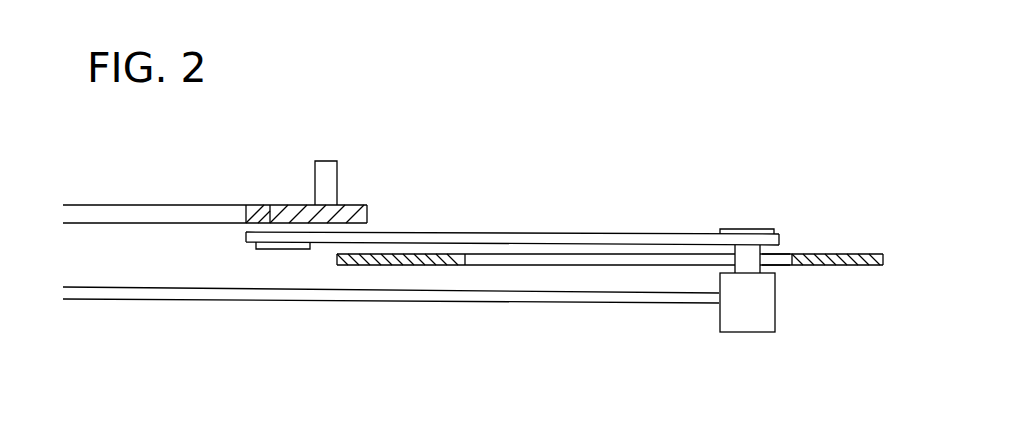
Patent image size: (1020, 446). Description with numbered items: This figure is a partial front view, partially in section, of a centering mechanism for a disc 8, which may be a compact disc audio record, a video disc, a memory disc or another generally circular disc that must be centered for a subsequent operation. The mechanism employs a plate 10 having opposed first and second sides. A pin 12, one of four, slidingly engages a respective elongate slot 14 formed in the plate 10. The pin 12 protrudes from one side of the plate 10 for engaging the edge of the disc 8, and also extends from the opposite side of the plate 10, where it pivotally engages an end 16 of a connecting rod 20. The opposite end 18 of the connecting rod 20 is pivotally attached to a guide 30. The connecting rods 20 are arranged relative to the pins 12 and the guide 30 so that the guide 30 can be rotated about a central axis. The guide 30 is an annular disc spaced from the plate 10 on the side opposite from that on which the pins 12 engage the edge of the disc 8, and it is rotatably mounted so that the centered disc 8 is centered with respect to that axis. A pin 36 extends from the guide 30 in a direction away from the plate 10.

The disc 8 is at (163, 293).
The plate 10 is at (850, 263).
The pins 12 is at (753, 315).
The elongate slots 14 is at (778, 262).
The end of connecting rod 16 is at (742, 260).
The opposite end of connecting rod 18 is at (278, 248).
The connecting rod 20 is at (488, 240).
The guide 30 is at (263, 205).
The pin 36 is at (332, 183).